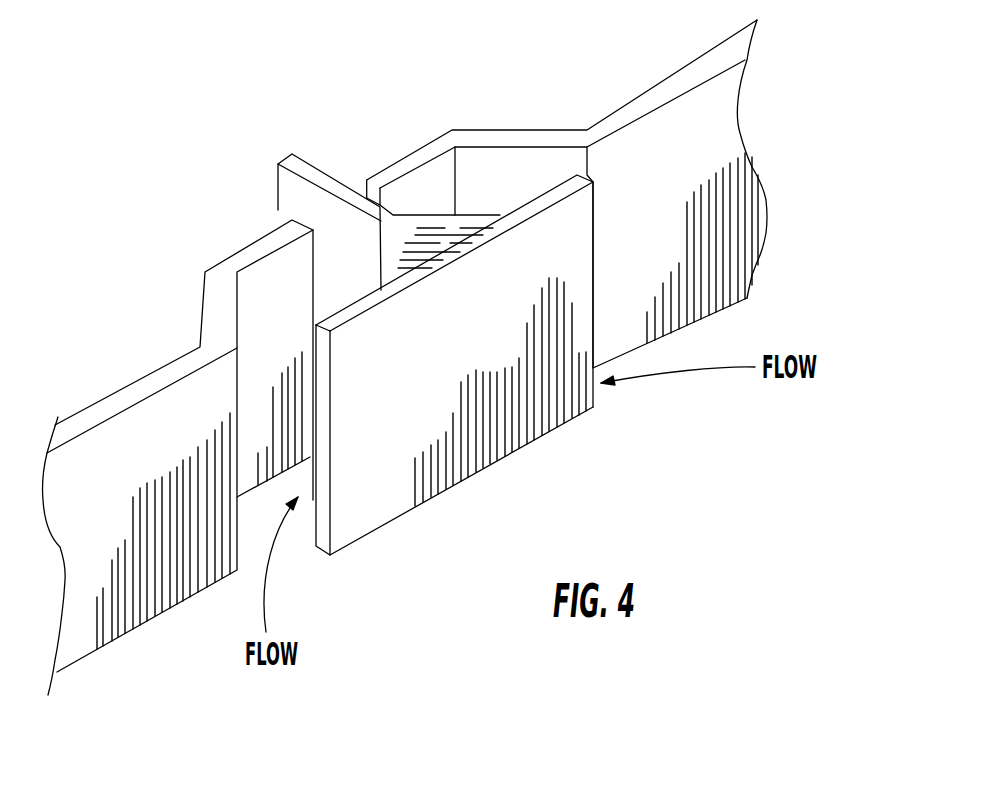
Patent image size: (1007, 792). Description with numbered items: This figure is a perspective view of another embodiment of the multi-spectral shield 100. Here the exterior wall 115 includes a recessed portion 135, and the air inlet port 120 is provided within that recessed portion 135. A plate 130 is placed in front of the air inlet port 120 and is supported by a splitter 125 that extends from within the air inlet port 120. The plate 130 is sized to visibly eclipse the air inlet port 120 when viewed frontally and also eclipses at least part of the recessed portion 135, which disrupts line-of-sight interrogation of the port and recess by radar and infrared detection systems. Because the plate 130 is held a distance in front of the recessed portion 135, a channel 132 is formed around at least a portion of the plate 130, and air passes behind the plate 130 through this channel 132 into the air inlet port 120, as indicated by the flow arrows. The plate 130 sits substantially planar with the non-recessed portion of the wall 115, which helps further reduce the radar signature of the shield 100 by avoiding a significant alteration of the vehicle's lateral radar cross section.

The multi-spectral shield 100 is at (175, 228).
The exterior wall 115 is at (738, 270).
The air inlet port 120 is at (341, 165).
The splitter 125 is at (293, 152).
The plate 130 is at (477, 477).
The channel 132 is at (610, 400).
The recessed portion 135 is at (418, 150).